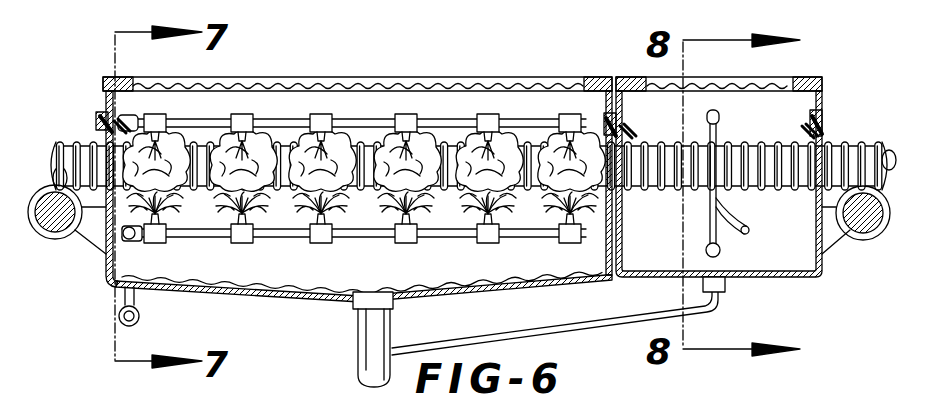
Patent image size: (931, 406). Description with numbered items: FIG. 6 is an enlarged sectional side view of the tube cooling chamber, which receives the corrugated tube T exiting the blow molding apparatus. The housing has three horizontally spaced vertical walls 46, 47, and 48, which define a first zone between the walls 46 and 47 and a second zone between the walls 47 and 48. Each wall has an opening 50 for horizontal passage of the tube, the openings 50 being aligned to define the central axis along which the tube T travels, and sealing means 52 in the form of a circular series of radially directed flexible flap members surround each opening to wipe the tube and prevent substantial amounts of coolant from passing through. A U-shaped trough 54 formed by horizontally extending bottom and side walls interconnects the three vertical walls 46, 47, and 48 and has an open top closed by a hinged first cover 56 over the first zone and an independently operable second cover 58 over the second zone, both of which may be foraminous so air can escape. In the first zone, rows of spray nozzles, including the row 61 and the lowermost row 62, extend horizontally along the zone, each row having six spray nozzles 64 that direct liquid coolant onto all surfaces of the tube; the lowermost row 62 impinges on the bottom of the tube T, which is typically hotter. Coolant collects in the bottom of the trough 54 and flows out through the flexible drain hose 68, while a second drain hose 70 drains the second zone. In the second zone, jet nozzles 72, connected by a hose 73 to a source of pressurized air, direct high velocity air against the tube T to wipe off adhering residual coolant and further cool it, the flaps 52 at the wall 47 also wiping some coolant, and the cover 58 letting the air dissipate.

The vertical wall 46 is at (106, 272).
The vertical wall 47 is at (608, 270).
The vertical wall 48 is at (826, 262).
The opening 50 is at (118, 128).
The sealing means 52 is at (100, 124).
The U-shaped trough 54 is at (266, 290).
The first cover 56 is at (500, 84).
The second cover 58 is at (792, 82).
The row of spray nozzles 61 is at (272, 122).
The lowermost row of spray nozzles 62 is at (318, 240).
The spray nozzle 64 is at (483, 118).
The flexible drain hose 68 is at (370, 350).
The second drain hose 70 is at (650, 318).
The jet nozzle 72 is at (717, 118).
The hose 73 is at (735, 224).
The corrugated tube T is at (893, 152).